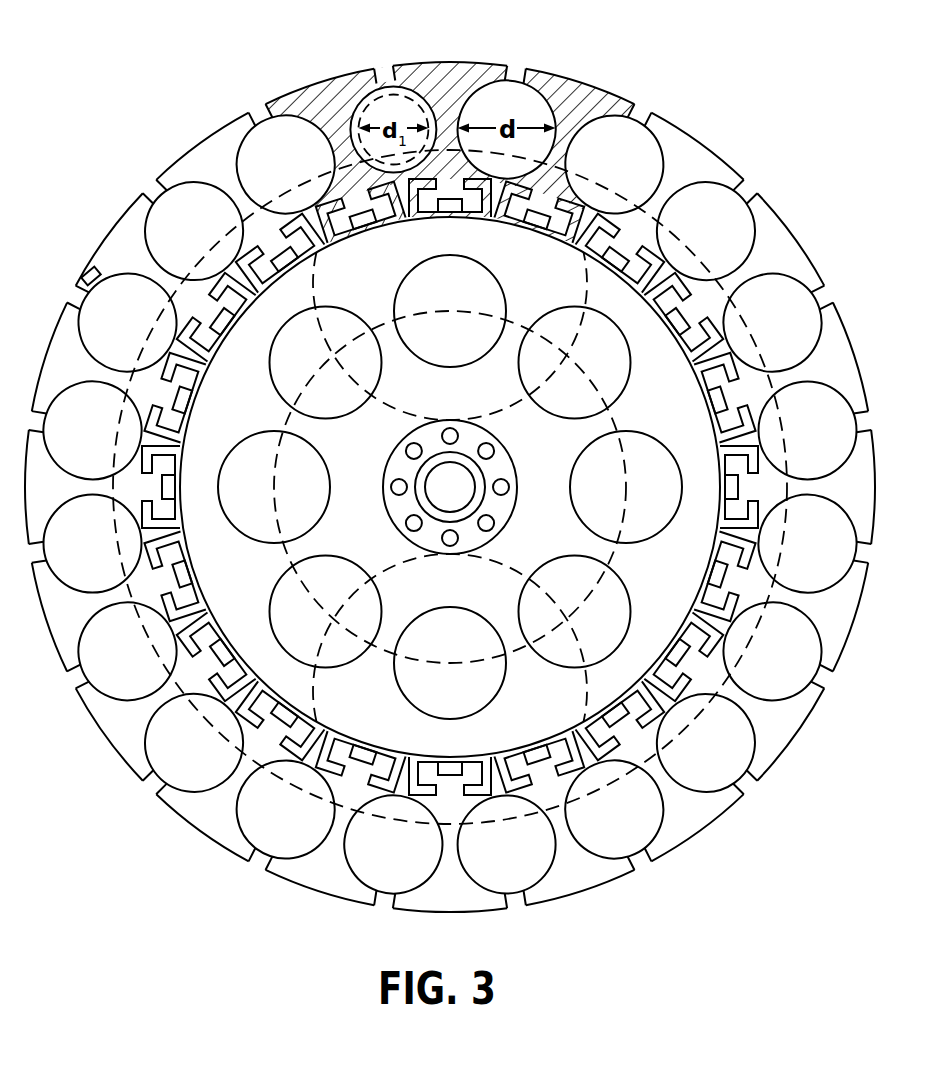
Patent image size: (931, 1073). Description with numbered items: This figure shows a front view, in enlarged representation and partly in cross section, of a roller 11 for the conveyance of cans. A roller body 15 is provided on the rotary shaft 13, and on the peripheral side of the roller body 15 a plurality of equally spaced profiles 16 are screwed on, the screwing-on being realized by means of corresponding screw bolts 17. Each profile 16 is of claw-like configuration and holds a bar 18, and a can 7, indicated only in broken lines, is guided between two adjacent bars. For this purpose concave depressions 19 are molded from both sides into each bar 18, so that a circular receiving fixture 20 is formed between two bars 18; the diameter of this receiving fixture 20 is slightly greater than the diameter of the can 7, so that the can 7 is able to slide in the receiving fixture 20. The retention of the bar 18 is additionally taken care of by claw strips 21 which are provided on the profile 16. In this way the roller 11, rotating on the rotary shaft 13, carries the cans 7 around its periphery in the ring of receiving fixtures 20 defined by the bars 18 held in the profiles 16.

The can 7 is at (399, 85).
The roller 11 is at (654, 90).
The rotary shaft 13 is at (512, 469).
The roller body 15 is at (677, 390).
The profile 16 is at (244, 322).
The screw bolt 17 is at (190, 396).
The bar 18 is at (323, 76).
The concave depression 19 is at (93, 342).
The circular receiving fixture 20 is at (185, 217).
The claw strip 21 is at (355, 226).